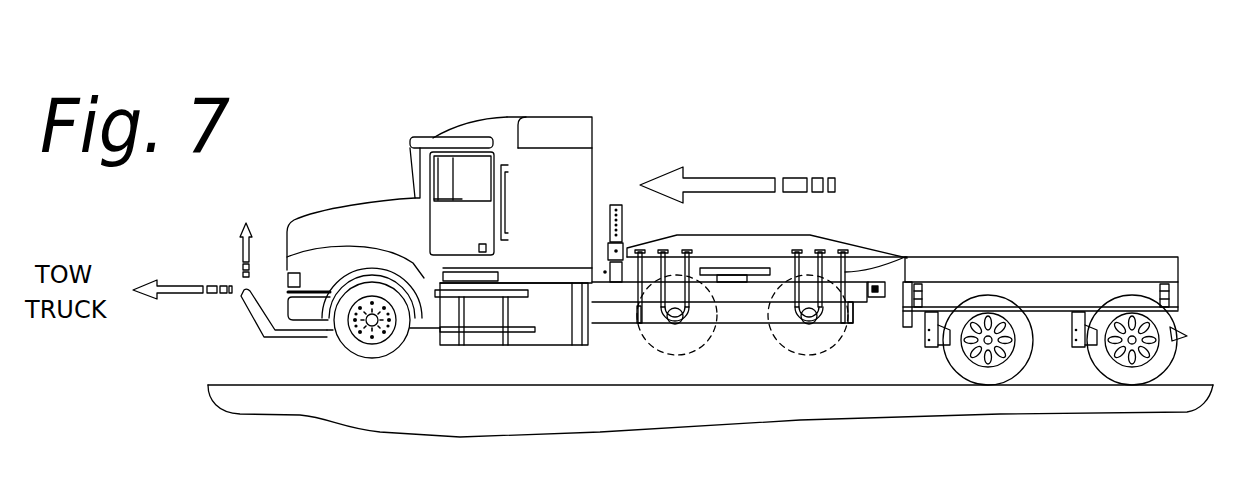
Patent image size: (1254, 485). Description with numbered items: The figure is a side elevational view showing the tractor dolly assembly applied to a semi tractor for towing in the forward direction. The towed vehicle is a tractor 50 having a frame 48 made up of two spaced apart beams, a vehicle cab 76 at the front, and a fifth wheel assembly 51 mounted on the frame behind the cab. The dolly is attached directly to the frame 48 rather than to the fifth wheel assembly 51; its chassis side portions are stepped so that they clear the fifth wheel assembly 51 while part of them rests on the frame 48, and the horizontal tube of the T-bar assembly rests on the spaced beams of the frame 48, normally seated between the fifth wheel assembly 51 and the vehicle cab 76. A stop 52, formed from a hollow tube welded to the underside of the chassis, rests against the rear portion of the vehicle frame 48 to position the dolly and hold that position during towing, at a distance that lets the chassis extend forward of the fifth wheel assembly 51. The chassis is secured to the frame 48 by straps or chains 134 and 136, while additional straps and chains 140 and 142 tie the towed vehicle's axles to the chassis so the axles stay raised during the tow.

The frame 48 is at (770, 282).
The tractor 50 is at (650, 131).
The fifth wheel assembly 51 is at (740, 263).
The stop 52 is at (905, 258).
The vehicle cab 76 is at (592, 140).
The straps or chains 134 is at (637, 275).
The straps or chains 136 is at (882, 281).
The additional straps and chains 140 is at (830, 252).
The additional straps and chains 142 is at (668, 252).